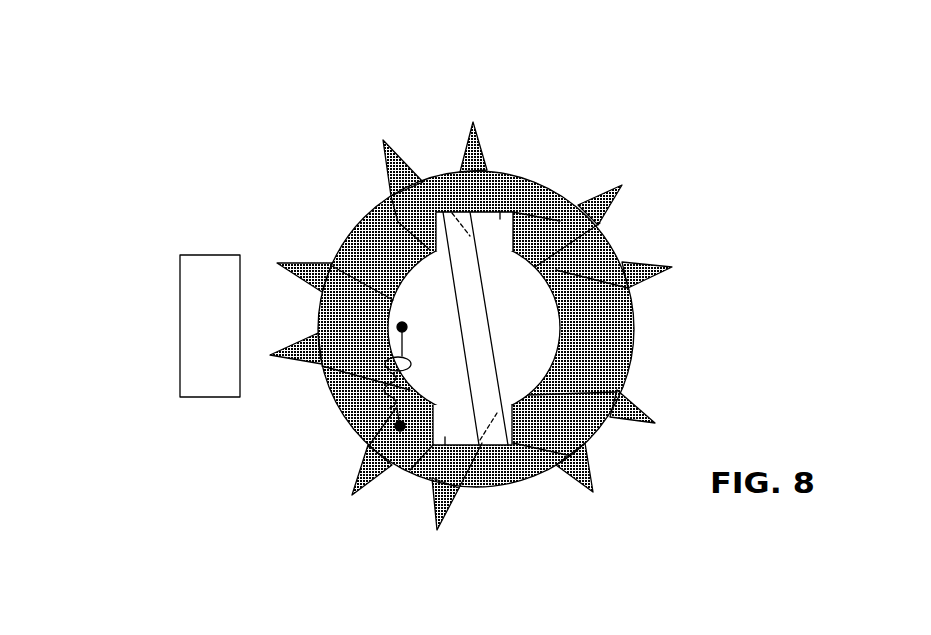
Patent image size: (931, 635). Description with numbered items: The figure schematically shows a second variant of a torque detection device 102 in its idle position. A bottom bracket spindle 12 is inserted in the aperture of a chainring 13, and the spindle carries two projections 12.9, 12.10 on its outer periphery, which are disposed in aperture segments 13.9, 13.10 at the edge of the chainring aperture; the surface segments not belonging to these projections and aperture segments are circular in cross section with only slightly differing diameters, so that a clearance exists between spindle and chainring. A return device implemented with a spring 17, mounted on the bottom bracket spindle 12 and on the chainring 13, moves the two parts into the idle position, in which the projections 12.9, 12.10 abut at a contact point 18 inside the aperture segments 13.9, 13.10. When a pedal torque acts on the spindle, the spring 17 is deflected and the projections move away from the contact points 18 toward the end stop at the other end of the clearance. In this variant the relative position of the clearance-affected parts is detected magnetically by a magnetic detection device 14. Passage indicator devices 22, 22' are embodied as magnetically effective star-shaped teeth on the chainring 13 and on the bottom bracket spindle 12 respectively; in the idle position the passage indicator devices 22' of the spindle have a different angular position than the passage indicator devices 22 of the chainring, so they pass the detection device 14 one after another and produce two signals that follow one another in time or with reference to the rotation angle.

The torque detection device 102 is at (262, 128).
The bottom bracket spindle 12 is at (537, 333).
The projection 12.9 is at (458, 210).
The projection 12.10 is at (497, 447).
The chainring 13 is at (498, 328).
The aperture segment 13.9 is at (507, 208).
The aperture segment 13.10 is at (415, 455).
The magnetic detection device 14 is at (200, 323).
The spring 17 is at (352, 420).
The contact point 18 is at (395, 190).
The passage indicator device 22 is at (498, 316).
The passage indicator device 22' is at (497, 350).